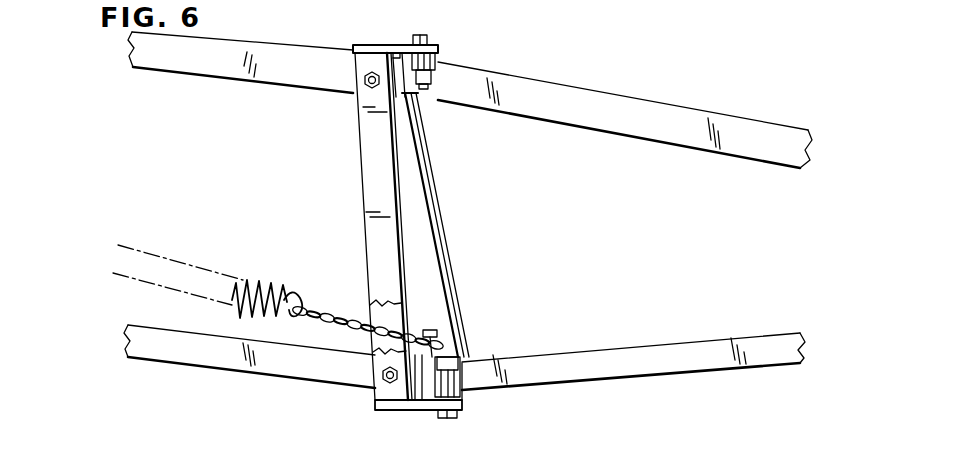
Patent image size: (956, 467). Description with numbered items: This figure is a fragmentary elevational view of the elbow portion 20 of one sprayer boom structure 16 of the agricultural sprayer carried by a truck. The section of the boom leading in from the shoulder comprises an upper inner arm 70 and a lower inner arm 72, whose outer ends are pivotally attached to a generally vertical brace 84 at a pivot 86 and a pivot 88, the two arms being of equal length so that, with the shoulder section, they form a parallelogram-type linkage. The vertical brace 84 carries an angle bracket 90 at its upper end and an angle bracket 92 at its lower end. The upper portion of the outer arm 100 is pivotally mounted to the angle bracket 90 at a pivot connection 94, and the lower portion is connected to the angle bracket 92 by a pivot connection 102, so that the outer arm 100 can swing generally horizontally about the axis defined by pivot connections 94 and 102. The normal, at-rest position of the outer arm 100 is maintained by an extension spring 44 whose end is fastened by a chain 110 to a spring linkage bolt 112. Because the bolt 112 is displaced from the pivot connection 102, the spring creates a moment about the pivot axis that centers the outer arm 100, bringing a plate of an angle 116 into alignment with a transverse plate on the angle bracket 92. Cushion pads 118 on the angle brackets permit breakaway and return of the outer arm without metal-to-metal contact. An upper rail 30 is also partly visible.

The sprayer boom structure 16 is at (627, 58).
The elbow portion 20 is at (358, 210).
The upper rail 30 is at (334, 2).
The extension spring 44 is at (263, 284).
The upper inner arm 70 is at (254, 56).
The lower inner arm 72 is at (180, 354).
The vertical brace 84 is at (368, 180).
The pivot 86 is at (366, 86).
The pivot 88 is at (383, 380).
The angle bracket 90 is at (368, 45).
The angle bracket 92 is at (393, 409).
The pivot connection 94 is at (431, 38).
The outer arm 100 is at (723, 128).
The pivot connection 102 is at (450, 413).
The chain 110 is at (333, 307).
The spring linkage bolt 112 is at (440, 333).
The angle 116 is at (412, 97).
The cushion pads 118 is at (396, 97).